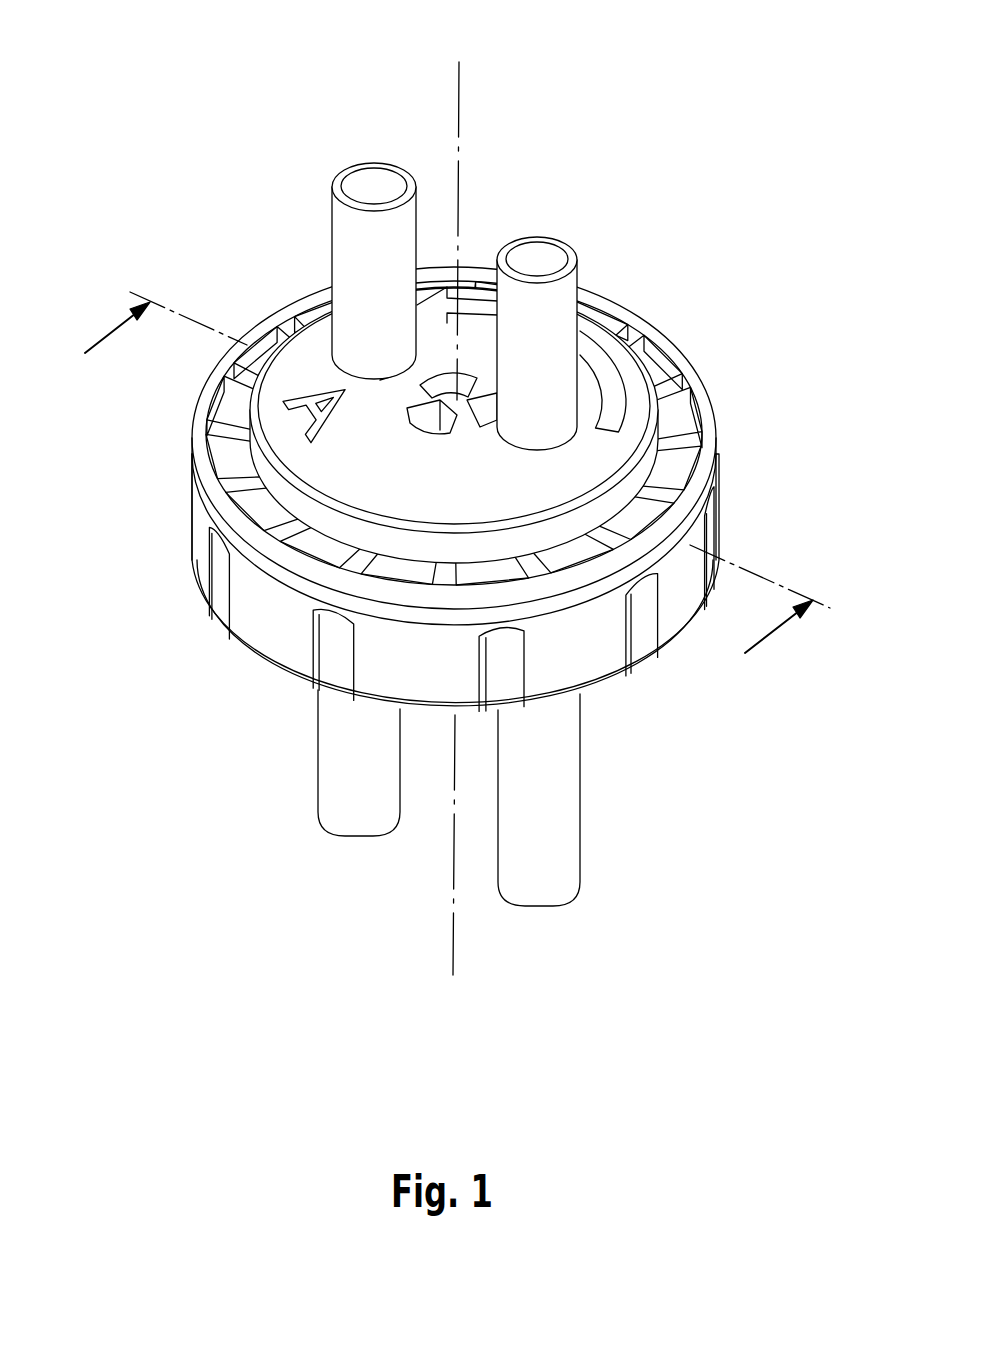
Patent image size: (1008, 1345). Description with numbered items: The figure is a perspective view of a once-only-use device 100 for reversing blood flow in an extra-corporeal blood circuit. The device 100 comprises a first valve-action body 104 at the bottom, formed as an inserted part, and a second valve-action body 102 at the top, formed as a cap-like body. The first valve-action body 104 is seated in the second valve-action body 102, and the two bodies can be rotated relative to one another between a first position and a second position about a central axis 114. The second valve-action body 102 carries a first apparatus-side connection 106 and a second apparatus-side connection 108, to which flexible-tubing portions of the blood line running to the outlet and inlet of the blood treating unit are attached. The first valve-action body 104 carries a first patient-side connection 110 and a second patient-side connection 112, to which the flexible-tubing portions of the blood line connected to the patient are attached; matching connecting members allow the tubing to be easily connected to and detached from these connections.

The device for reversing flow 100 is at (451, 518).
The second valve-action body 102 is at (700, 397).
The first valve-action body 104 is at (273, 670).
The first apparatus-side connection 106 is at (370, 182).
The second apparatus-side connection 108 is at (543, 257).
The first patient-side connection 110 is at (358, 838).
The second patient-side connection 112 is at (547, 906).
The central axis 114 is at (460, 92).